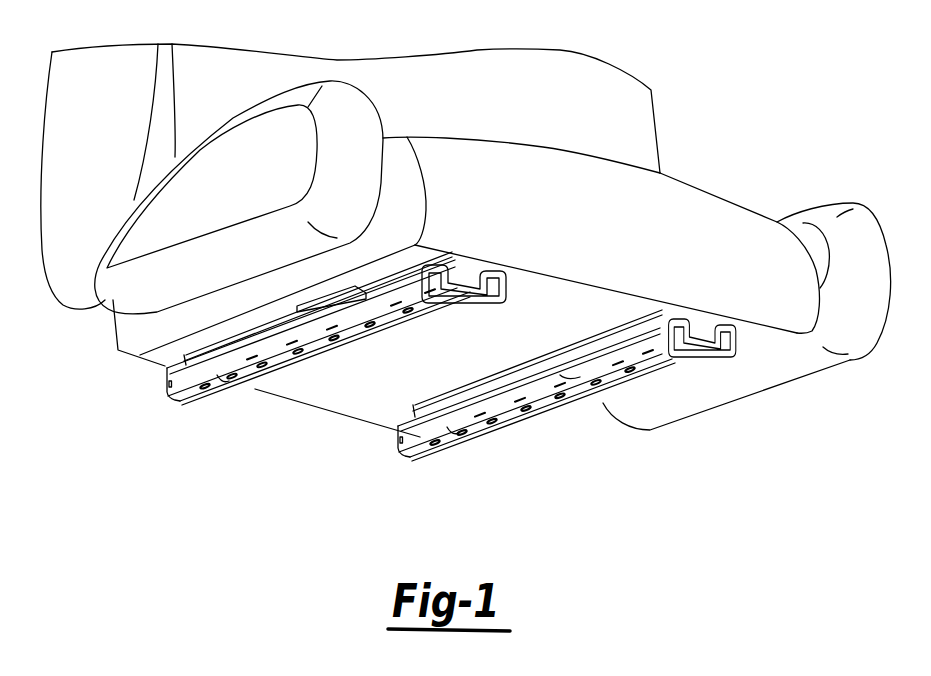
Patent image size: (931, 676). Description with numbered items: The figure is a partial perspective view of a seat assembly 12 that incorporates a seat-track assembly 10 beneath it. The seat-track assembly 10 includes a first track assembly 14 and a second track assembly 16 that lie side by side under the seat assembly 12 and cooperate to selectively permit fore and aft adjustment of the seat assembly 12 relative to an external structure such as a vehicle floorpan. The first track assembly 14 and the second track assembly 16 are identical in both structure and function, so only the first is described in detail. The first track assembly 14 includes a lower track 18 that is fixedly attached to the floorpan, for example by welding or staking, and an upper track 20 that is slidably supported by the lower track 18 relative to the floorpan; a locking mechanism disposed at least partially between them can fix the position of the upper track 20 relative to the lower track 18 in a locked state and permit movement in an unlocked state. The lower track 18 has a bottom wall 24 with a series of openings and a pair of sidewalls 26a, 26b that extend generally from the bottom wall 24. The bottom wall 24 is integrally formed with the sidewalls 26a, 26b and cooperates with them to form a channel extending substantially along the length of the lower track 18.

The seat-track assembly 10 is at (274, 484).
The seat assembly 12 is at (714, 96).
The first track assembly 14 is at (181, 411).
The second track assembly 16 is at (418, 462).
The lower track 18 is at (216, 409).
The upper track 20 is at (187, 357).
The bottom wall 24 is at (311, 363).
The sidewall 26a is at (307, 340).
The sidewall 26b is at (518, 270).